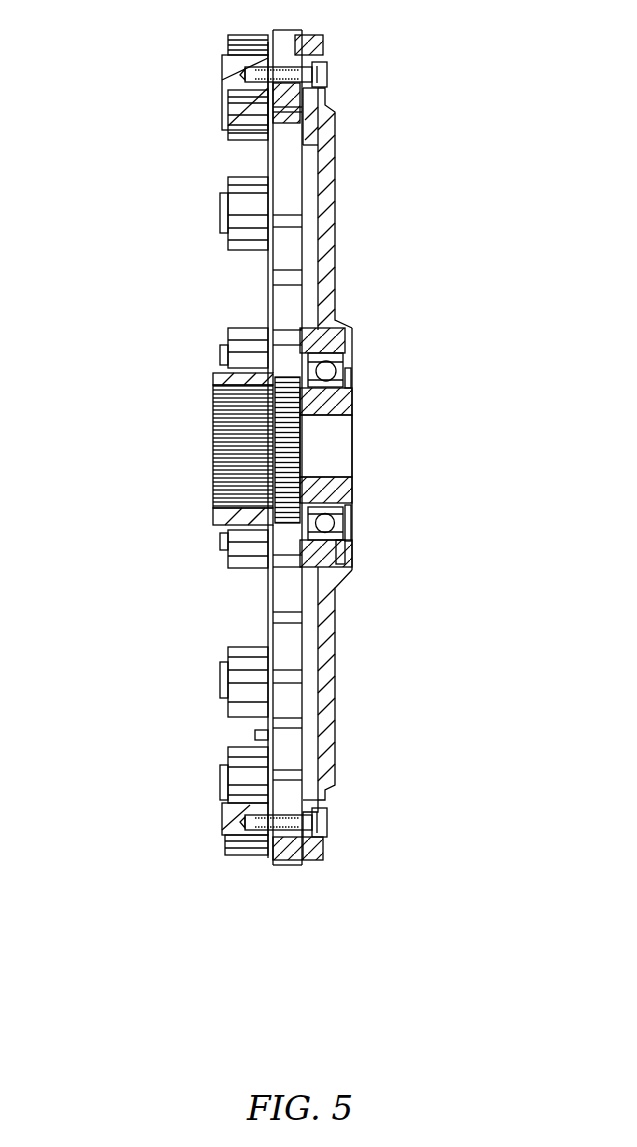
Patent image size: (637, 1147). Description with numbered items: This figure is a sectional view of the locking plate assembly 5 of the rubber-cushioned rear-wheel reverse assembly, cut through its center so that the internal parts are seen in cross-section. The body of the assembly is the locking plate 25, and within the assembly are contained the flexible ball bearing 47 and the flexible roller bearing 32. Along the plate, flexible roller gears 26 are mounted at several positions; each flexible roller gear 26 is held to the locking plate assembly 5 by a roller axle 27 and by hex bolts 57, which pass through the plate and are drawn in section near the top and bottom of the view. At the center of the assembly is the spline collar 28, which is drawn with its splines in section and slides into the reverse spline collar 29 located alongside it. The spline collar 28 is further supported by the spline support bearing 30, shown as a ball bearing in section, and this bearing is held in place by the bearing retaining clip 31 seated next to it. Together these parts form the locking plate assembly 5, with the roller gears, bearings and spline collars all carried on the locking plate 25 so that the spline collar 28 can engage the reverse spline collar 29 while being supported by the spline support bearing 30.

The locking plate assembly 5 is at (391, 209).
The locking plate 25 is at (403, 683).
The flexible roller gear 26 is at (160, 646).
The roller axle 27 is at (140, 670).
The spline collar 28 is at (176, 449).
The reverse spline collar 29 is at (394, 449).
The spline support bearing 30 is at (412, 491).
The bearing retaining clip 31 is at (398, 457).
The flexible roller bearing 32 is at (248, 488).
The flexible ball bearing 47 is at (396, 828).
The hex bolts 57 is at (364, 451).